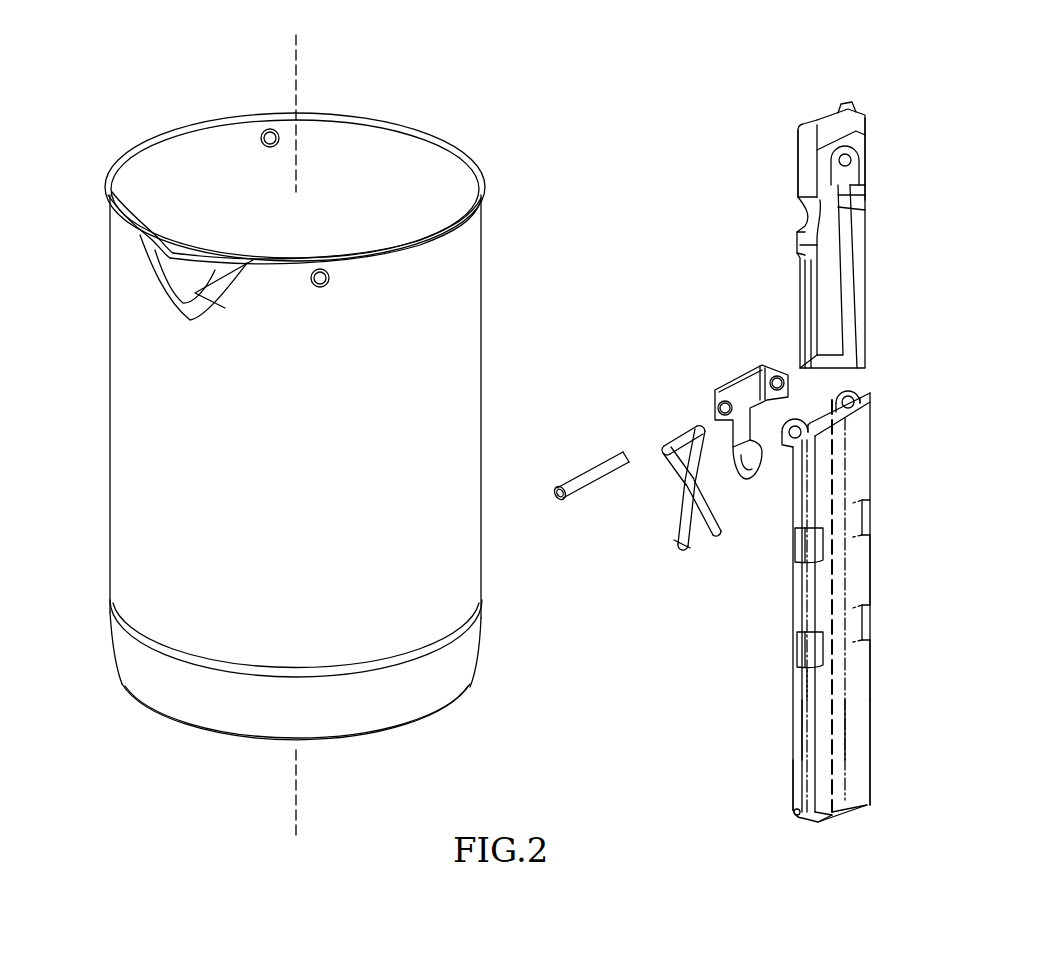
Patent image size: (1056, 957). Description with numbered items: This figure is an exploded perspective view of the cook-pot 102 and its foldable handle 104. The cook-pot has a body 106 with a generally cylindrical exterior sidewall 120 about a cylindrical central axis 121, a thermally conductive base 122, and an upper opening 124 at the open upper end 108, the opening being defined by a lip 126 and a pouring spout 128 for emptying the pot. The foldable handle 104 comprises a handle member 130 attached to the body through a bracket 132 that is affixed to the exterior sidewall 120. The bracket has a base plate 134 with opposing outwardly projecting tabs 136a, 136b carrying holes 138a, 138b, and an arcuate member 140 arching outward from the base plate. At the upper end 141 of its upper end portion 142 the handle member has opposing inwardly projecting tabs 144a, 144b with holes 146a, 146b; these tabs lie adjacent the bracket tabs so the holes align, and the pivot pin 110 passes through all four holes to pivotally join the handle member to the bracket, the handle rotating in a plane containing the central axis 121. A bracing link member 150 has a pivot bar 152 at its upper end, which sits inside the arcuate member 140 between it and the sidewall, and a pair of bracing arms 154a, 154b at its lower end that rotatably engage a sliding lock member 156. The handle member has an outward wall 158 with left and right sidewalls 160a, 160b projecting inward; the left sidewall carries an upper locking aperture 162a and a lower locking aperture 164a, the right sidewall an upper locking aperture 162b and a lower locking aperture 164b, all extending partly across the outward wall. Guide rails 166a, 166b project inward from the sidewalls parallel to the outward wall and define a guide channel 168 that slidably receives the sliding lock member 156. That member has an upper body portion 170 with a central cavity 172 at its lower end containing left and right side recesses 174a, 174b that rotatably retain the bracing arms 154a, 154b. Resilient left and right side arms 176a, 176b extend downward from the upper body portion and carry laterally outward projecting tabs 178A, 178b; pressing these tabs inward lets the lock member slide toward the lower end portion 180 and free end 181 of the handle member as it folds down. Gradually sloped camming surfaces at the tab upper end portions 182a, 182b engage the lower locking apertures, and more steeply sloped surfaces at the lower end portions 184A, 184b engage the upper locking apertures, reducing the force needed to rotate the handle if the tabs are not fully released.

The cook-pot 102 is at (108, 432).
The foldable handle 104 is at (865, 685).
The body 106 is at (295, 289).
The open upper end 108 is at (468, 257).
The pivot pin 110 is at (580, 477).
The exterior sidewall 120 is at (127, 578).
The cylindrical central axis 121 is at (297, 82).
The thermally conductive base 122 is at (397, 713).
The upper opening 124 is at (387, 145).
The lip 126 is at (470, 158).
The pouring spout 128 is at (172, 268).
The handle member 130 is at (870, 590).
The bracket 132 is at (740, 380).
The base plate 134 is at (733, 383).
The outwardly projecting tab 136a is at (713, 390).
The outwardly projecting tab 136b is at (788, 383).
The hole 138a is at (713, 408).
The hole 138b is at (870, 390).
The arcuate member 140 is at (757, 462).
The upper end 141 is at (802, 432).
The upper end portion 142 is at (857, 565).
The inwardly projecting tab 144a is at (812, 428).
The inwardly projecting tab 144b is at (872, 395).
The hole 146a is at (822, 442).
The hole 146b is at (870, 415).
The bracing link member 150 is at (677, 480).
The pivot bar 152 is at (687, 430).
The bracing arm 154a is at (680, 540).
The bracing arm 154b is at (717, 540).
The sliding lock member 156 is at (808, 122).
The outward wall 158 is at (793, 718).
The left sidewall 160a is at (798, 780).
The right sidewall 160b is at (866, 812).
The upper locking aperture 162a is at (797, 545).
The upper locking aperture 162b is at (862, 520).
The lower locking aperture 164a is at (797, 648).
The lower locking aperture 164b is at (862, 625).
The guide rail 166a is at (793, 683).
The guide rail 166b is at (848, 715).
The guide channel 168 is at (800, 827).
The upper body portion 170 is at (845, 105).
The central cavity 172 is at (858, 150).
The left side recess 174a is at (800, 165).
The right side recess 174b is at (866, 160).
The left side arm 176a is at (800, 205).
The right side arm 176b is at (852, 168).
The laterally outward projecting tab 178A is at (796, 232).
The laterally outward projecting tab 178b is at (850, 195).
The lower end portion 180 is at (862, 760).
The free end 181 is at (832, 814).
The upper end portion 182a is at (797, 247).
The upper end portion 182b is at (860, 187).
The lower end portion 184A is at (795, 250).
The lower end portion 184b is at (868, 210).